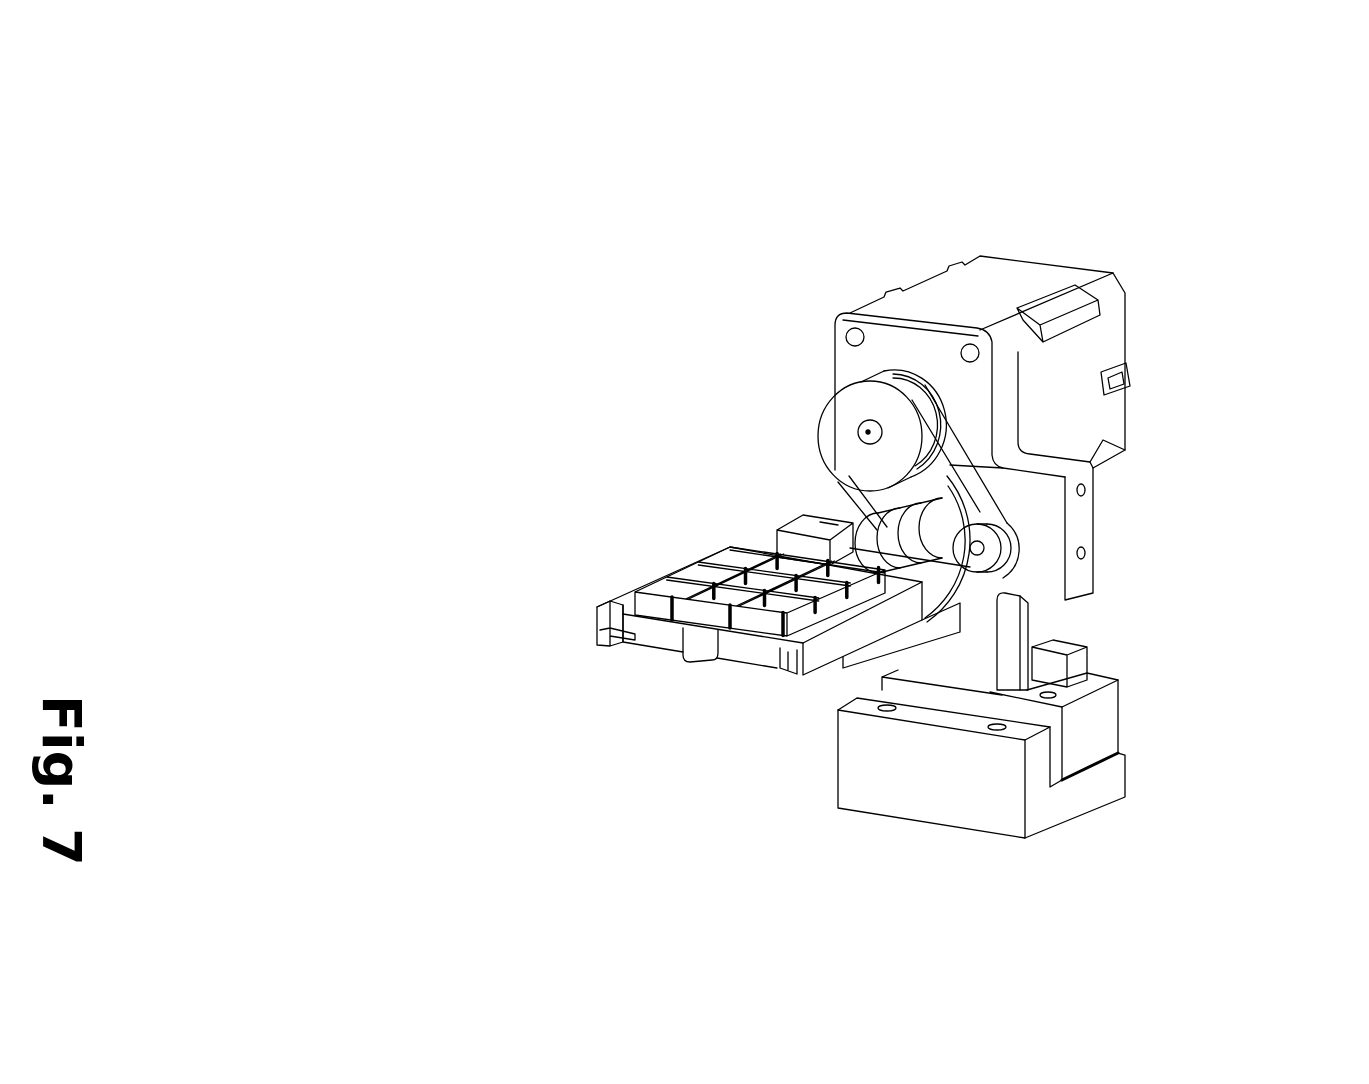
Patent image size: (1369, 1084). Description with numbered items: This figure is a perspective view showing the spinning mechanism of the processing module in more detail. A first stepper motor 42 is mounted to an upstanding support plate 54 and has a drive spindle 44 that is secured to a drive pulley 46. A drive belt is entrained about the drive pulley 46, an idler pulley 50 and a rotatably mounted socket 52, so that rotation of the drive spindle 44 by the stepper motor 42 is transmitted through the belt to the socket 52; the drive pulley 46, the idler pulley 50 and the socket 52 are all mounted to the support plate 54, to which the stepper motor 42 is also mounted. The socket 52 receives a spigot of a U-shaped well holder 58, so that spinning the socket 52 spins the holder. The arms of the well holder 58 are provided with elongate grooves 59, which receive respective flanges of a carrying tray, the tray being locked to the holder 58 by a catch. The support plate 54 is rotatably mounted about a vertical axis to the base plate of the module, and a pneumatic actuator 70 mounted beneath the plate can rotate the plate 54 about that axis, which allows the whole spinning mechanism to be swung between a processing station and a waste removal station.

The first stepper motor 42 is at (1110, 273).
The drive spindle 44 is at (866, 431).
The drive pulley 46 is at (950, 435).
The idler pulley 50 is at (985, 558).
The rotatably mounted socket 52 is at (838, 512).
The upstanding support plate 54 is at (1054, 566).
The U-shaped well holder 58 is at (840, 637).
The elongate grooves 59 is at (600, 638).
The pneumatic actuator 70 is at (1085, 712).